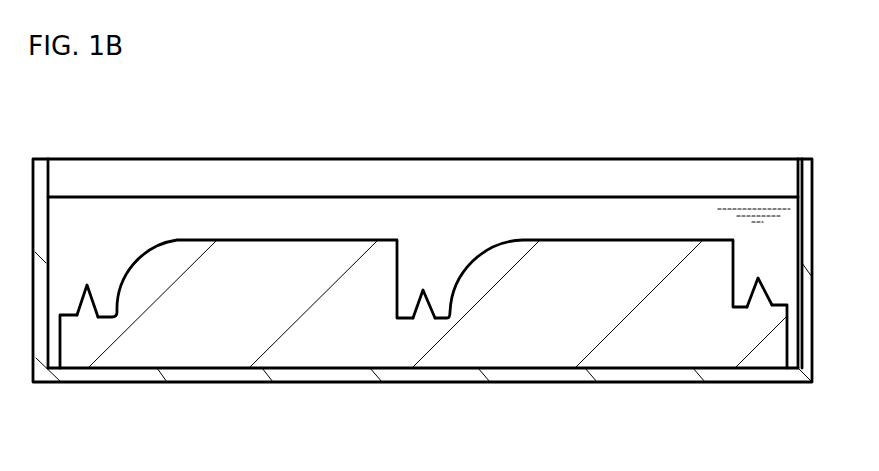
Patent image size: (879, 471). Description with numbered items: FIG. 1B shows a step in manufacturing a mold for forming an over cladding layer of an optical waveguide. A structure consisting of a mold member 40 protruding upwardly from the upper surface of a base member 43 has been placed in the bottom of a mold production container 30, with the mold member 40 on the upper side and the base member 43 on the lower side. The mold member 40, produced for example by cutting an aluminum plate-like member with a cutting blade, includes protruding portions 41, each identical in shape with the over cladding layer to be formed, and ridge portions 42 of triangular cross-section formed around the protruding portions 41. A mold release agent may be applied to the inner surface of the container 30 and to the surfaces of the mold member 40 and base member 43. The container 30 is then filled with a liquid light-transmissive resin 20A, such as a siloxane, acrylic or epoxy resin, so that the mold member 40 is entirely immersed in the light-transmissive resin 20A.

The mold production container 30 is at (33, 296).
The mold member 40 is at (247, 228).
The protruding portions 41 is at (288, 252).
The ridge portions 42 is at (87, 307).
The light-transmissive resin 20A is at (505, 212).
The base member 43 is at (772, 358).